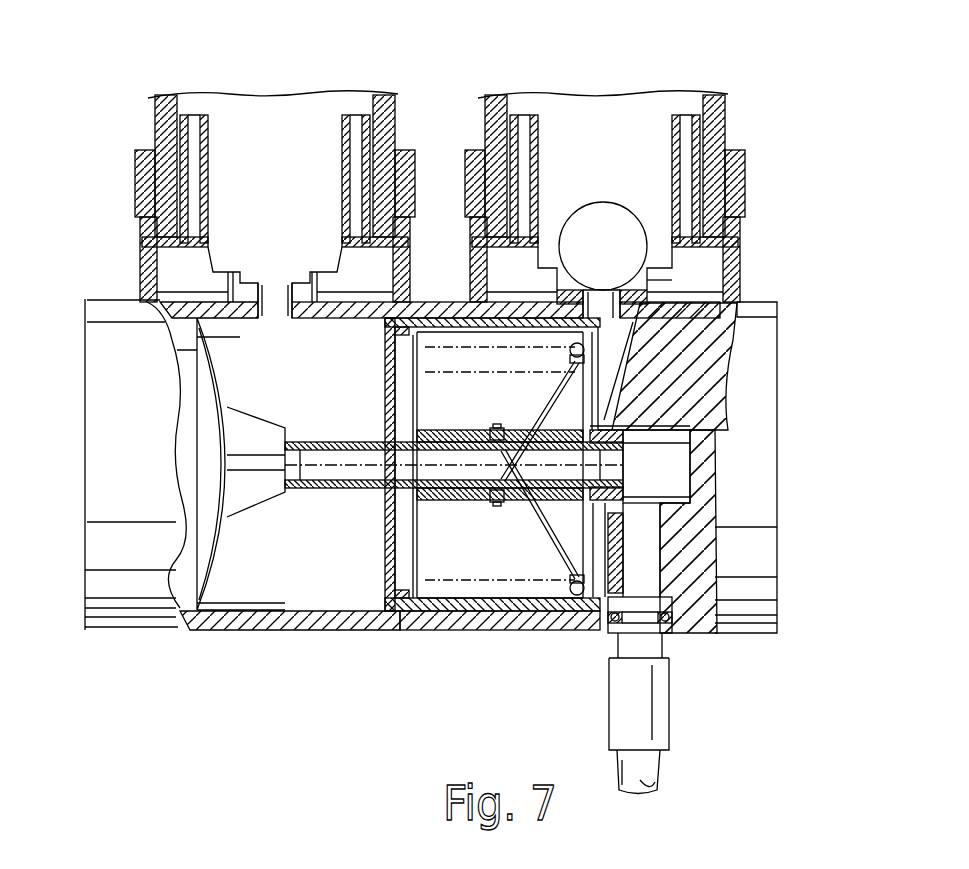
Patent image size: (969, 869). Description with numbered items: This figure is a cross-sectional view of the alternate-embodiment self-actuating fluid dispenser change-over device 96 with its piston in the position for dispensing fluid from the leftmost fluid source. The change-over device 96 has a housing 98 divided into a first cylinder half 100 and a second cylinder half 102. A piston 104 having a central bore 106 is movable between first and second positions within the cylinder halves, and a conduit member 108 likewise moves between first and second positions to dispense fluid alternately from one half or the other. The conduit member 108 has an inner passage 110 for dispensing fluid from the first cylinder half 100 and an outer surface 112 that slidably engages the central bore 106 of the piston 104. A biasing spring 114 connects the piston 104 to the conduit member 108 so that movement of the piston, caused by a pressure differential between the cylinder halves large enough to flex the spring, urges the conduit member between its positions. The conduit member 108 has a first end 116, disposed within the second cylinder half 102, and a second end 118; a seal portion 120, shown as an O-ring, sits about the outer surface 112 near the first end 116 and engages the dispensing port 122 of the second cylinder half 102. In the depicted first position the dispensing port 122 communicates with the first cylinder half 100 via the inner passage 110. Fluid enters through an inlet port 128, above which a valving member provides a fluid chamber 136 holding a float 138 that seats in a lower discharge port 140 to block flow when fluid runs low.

The self-actuating fluid dispenser change-over device 96 is at (100, 66).
The housing 98 is at (58, 277).
The first cylinder half 100 is at (263, 620).
The second cylinder half 102 is at (497, 624).
The piston 104 is at (377, 598).
The central bore 106 is at (376, 494).
The conduit member 108 is at (372, 440).
The inner passage 110 is at (326, 467).
The outer surface 112 is at (302, 440).
The biasing spring 114 is at (550, 395).
The first end 116 is at (276, 474).
The second end 118 is at (600, 466).
The seal portion 120 is at (688, 342).
The dispensing port 122 is at (650, 563).
The inlet port 128 is at (275, 300).
The fluid chamber 136 is at (260, 138).
The float 138 is at (582, 235).
The lower discharge port 140 is at (655, 269).